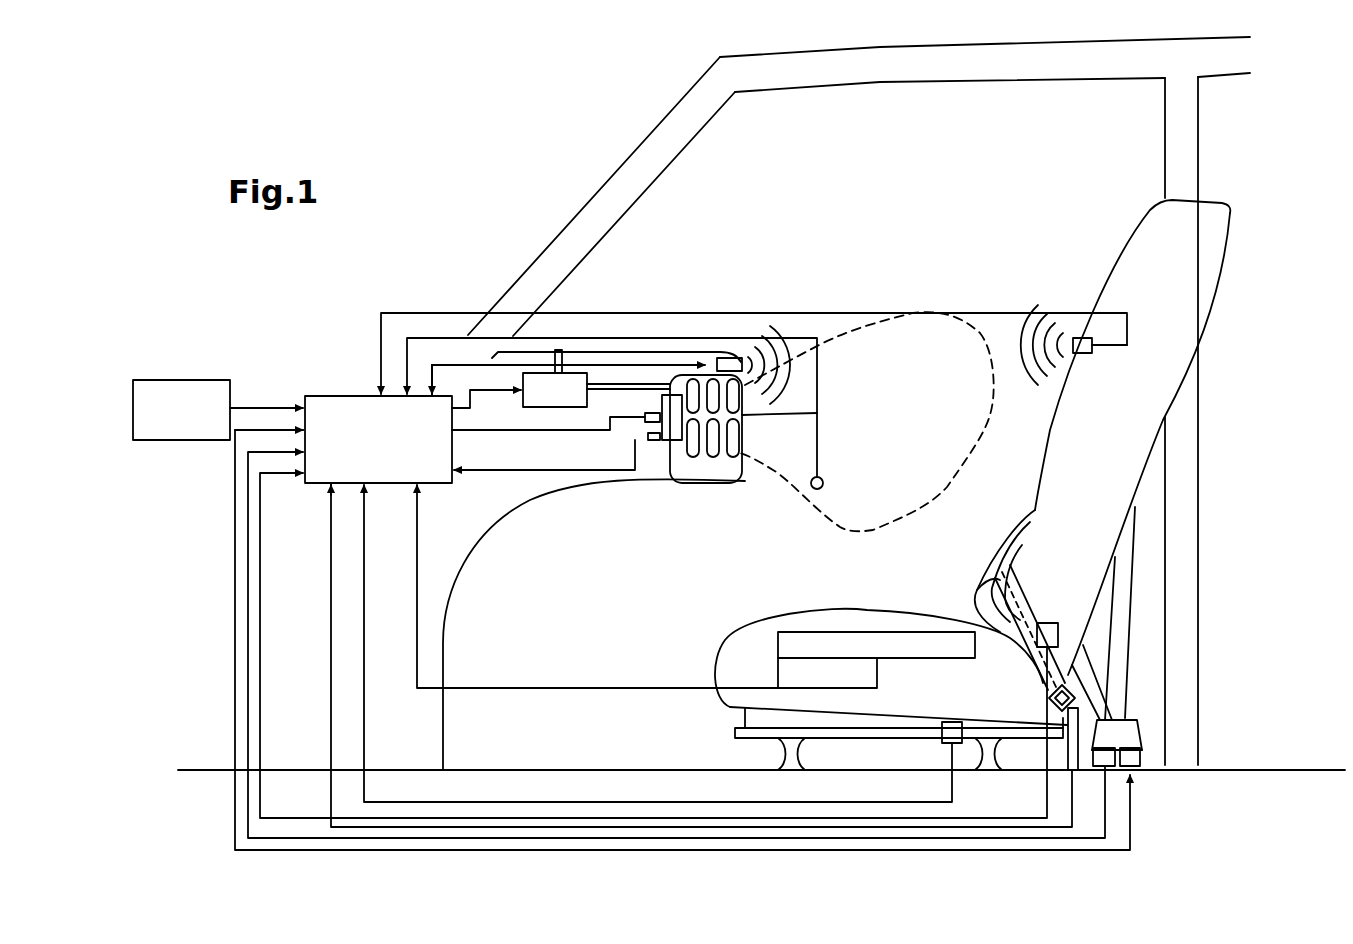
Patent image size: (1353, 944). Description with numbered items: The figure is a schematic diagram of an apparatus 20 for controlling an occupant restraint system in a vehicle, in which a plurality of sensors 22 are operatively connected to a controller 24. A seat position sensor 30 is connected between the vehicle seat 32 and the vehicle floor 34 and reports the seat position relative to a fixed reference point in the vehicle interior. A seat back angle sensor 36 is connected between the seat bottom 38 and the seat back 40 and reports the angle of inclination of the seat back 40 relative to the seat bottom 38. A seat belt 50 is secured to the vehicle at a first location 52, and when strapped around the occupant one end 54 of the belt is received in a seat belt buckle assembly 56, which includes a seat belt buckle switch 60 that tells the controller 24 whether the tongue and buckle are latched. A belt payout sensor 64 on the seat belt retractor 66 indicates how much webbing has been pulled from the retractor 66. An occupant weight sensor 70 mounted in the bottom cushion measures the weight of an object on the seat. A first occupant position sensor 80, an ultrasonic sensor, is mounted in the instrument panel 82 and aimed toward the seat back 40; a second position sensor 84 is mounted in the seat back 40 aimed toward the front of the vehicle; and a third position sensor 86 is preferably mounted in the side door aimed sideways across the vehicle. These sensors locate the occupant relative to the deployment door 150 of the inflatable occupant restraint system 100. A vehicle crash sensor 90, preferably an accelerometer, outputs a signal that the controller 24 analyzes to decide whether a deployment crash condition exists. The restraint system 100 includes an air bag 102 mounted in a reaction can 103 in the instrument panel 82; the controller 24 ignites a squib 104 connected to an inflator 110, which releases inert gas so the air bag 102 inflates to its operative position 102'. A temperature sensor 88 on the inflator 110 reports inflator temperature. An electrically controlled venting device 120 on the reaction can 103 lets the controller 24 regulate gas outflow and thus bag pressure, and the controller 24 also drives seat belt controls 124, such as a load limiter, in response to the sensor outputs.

The apparatus for controlling an occupant restraint system 20 is at (455, 300).
The sensors 22 is at (1223, 605).
The controller 24 is at (402, 475).
The seat position sensor 30 is at (942, 737).
The vehicle seat 32 is at (1162, 440).
The vehicle floor 34 is at (512, 762).
The seat back angle sensor 36 is at (1047, 622).
The seat bottom 38 is at (758, 636).
The seat back 40 is at (1127, 470).
The seat belt 50 is at (1127, 565).
The first location 52 is at (1147, 710).
The end of the seat belt 54 is at (1040, 678).
The seat belt buckle assembly 56 is at (1078, 697).
The seat belt buckle switch 60 is at (1053, 705).
The belt payout sensor 64 is at (1100, 760).
The seat belt retractor 66 is at (1142, 750).
The occupant weight sensor 70 is at (787, 647).
The first occupant position sensor 80 is at (742, 372).
The instrument panel 82 is at (690, 355).
The second position sensor 84 is at (1082, 355).
The third position sensor 86 is at (823, 485).
The temperature sensor 88 is at (651, 442).
The vehicle crash sensor 90 is at (200, 441).
The inflatable occupant restraint system 100 is at (673, 384).
The air bag 102 is at (744, 418).
The operative position of the air bag 102' is at (876, 389).
The reaction can 103 is at (728, 470).
The squib 104 is at (648, 412).
The inflator 110 is at (676, 442).
The venting device 120 is at (548, 409).
The seat belt controls 124 is at (1132, 760).
The deployment door 150 is at (817, 413).